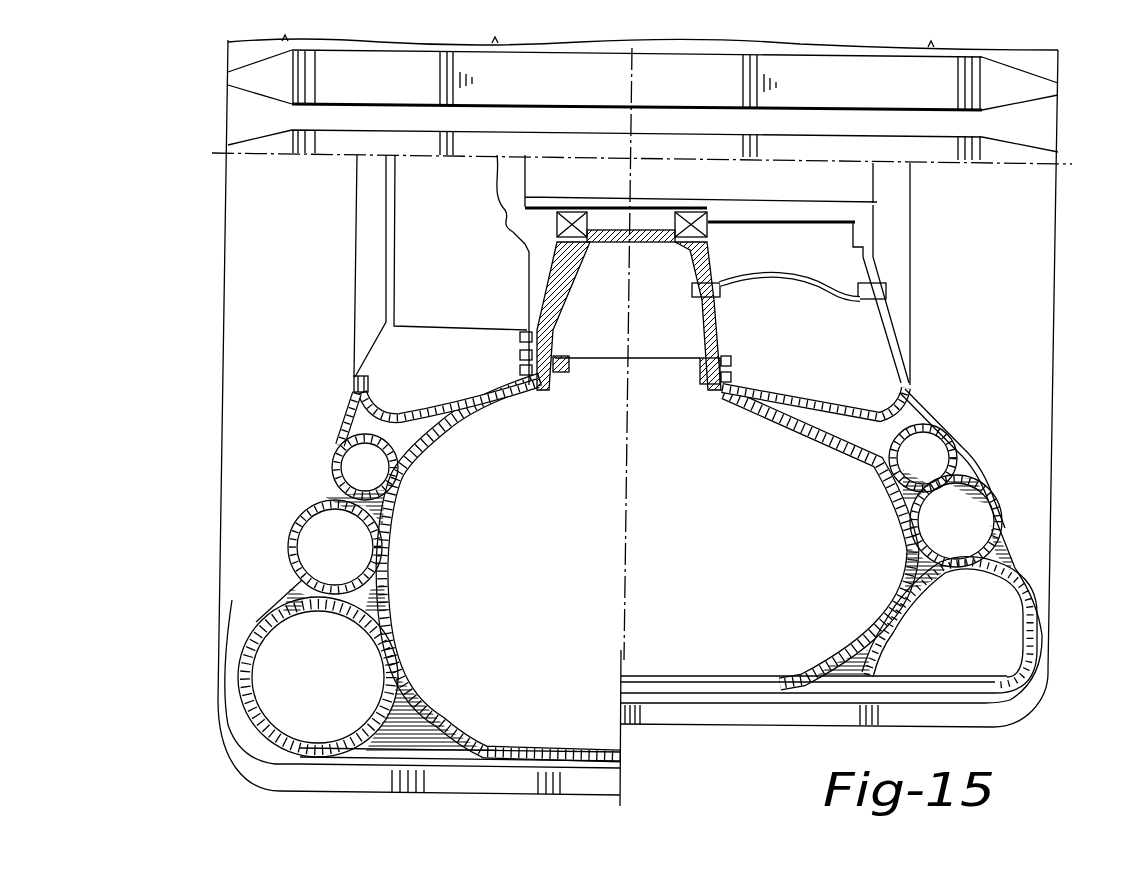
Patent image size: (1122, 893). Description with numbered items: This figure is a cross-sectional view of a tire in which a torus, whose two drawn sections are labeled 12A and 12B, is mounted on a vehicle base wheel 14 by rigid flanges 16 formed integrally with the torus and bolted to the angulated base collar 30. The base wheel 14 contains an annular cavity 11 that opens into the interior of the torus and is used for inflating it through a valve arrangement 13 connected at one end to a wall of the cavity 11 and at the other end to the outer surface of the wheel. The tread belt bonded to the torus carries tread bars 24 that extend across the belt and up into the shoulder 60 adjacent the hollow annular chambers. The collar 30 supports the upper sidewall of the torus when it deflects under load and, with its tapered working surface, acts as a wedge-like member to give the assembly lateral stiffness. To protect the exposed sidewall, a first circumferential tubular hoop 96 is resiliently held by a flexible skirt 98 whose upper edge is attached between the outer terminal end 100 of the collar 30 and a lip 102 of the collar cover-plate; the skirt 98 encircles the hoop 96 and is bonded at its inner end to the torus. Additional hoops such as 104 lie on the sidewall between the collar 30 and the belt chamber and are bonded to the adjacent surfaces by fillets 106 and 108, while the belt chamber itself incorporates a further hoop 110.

The tread bars 24 is at (1018, 153).
The vehicle base wheel 14 is at (353, 227).
The valve arrangement 13 is at (878, 283).
The annular cavity 11 is at (573, 288).
The rigid flanges 16 is at (552, 368).
The outer terminal end 100 is at (372, 385).
The lip 102 is at (353, 385).
The flexible skirt 98 is at (352, 408).
The angulated base collar 30 is at (398, 418).
The circumferential tubular hoop 96 is at (352, 468).
The fillet 106 is at (328, 490).
The additional hoop 104 is at (315, 541).
The fillet 108 is at (280, 578).
The hoop 110 is at (270, 657).
The shoulder 60 is at (228, 752).
The chamber 12A is at (437, 450).
The chamber 12B is at (870, 458).